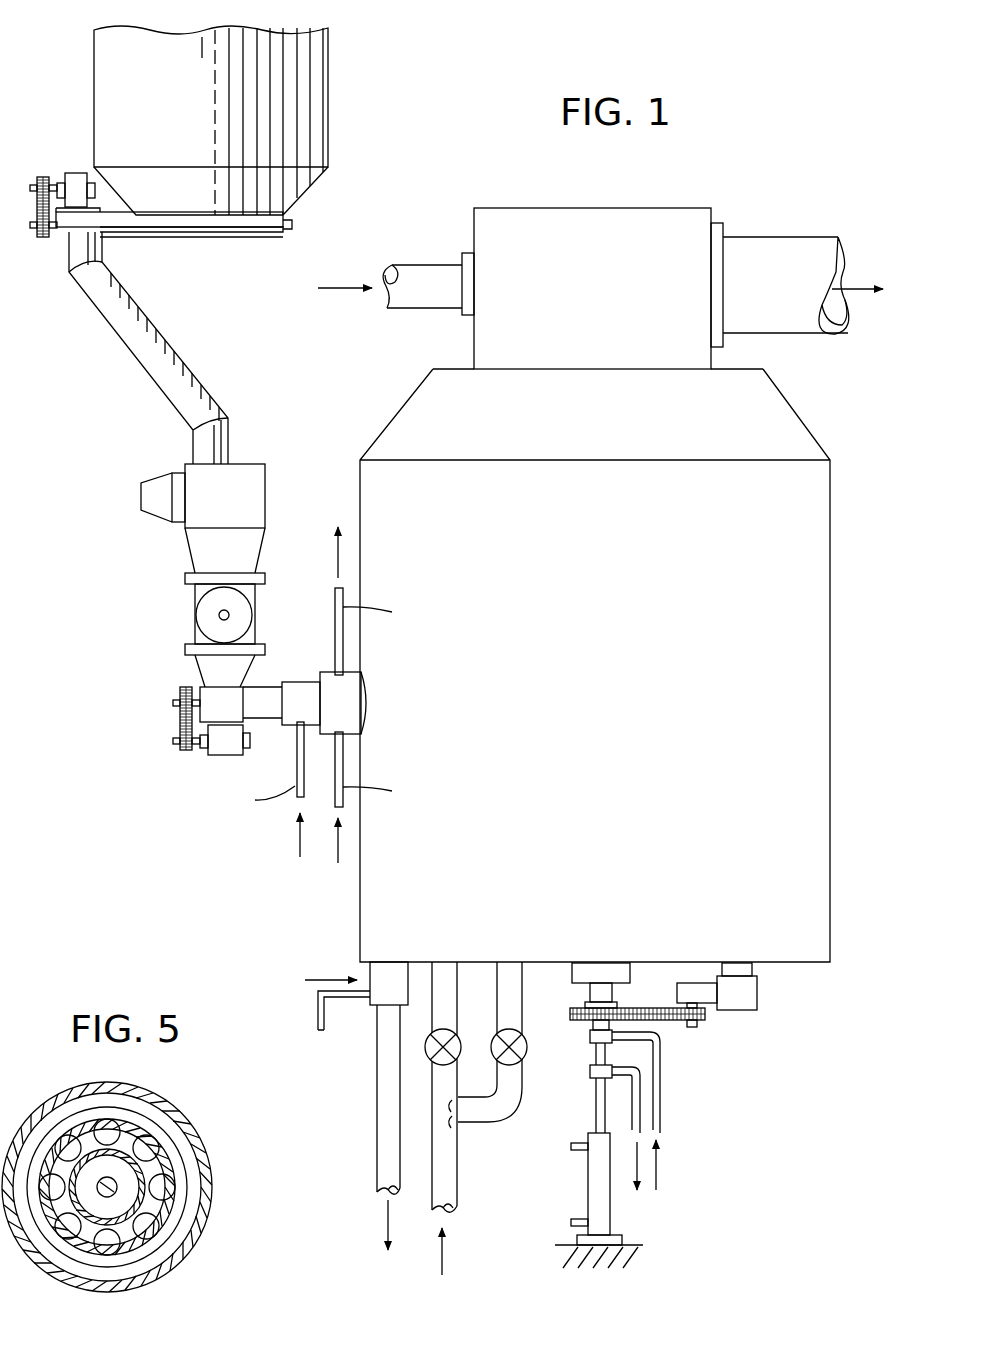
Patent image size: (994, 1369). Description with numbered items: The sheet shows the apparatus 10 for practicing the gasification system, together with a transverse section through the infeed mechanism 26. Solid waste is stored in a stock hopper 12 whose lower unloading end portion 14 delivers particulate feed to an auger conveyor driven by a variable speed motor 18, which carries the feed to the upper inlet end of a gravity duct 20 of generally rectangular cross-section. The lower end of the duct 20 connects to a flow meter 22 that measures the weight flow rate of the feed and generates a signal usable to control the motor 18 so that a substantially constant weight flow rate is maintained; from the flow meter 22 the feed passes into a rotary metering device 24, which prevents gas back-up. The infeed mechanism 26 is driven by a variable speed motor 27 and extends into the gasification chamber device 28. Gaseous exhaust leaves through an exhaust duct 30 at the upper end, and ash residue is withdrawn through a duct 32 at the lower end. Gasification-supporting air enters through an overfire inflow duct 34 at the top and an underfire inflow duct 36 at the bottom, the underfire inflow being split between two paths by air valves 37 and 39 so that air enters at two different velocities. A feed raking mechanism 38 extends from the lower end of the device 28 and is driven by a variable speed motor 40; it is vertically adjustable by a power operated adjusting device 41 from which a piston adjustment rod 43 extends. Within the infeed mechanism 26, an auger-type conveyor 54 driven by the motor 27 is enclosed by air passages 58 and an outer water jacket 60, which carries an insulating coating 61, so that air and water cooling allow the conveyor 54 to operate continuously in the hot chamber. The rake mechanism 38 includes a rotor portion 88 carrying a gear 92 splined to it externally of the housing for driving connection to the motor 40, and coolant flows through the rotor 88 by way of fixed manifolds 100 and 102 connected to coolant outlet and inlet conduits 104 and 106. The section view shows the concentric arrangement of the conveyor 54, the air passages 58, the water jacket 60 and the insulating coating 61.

In FIG. 1, the apparatus 10 is at (394, 194).
In FIG. 1, the stock hopper 12 is at (338, 73).
In FIG. 1, the lower unloading end portion 14 is at (314, 182).
In FIG. 1, the variable speed motor 18 is at (75, 175).
In FIG. 1, the gravity duct 20 is at (130, 353).
In FIG. 1, the flow meter 22 is at (150, 526).
In FIG. 1, the rotary metering device 24 is at (190, 608).
In FIG. 1, the infeed mechanism 26 is at (296, 695).
In FIG. 1, the variable speed motor 27 is at (222, 744).
In FIG. 1, the gasification chamber device 28 is at (355, 908).
In FIG. 1, the exhaust duct 30 is at (788, 247).
In FIG. 1, the duct 32 is at (385, 1134).
In FIG. 1, the overfire inflow duct 34 is at (430, 283).
In FIG. 1, the underfire inflow duct 36 is at (445, 1180).
In FIG. 1, the air valve 37 is at (490, 1040).
In FIG. 1, the feed raking mechanism 38 is at (683, 1033).
In FIG. 1, the air valve 39 is at (425, 1048).
In FIG. 1, the variable speed motor 40 is at (750, 990).
In FIG. 1, the power operated adjusting device 41 is at (605, 1208).
In FIG. 1, the piston adjustment rod 43 is at (598, 1118).
In FIG. 1, the auger-type conveyor 54 is at (212, 711).
In FIG. 5, the auger-type conveyor 54 is at (117, 1190).
In FIG. 1, the air passages 58 is at (298, 688).
In FIG. 1, the outer water jacket 60 is at (355, 700).
In FIG. 5, the outer water jacket 60 is at (185, 1178).
In FIG. 5, the insulating coating 61 is at (185, 1125).
In FIG. 1, the rotor portion 88 is at (598, 993).
In FIG. 1, the gear 92 is at (643, 1008).
In FIG. 1, the fixed manifold 100 is at (590, 1075).
In FIG. 1, the fixed manifold 102 is at (592, 1030).
In FIG. 1, the coolant outlet conduit 104 is at (643, 1112).
In FIG. 1, the coolant inlet conduit 106 is at (658, 1083).